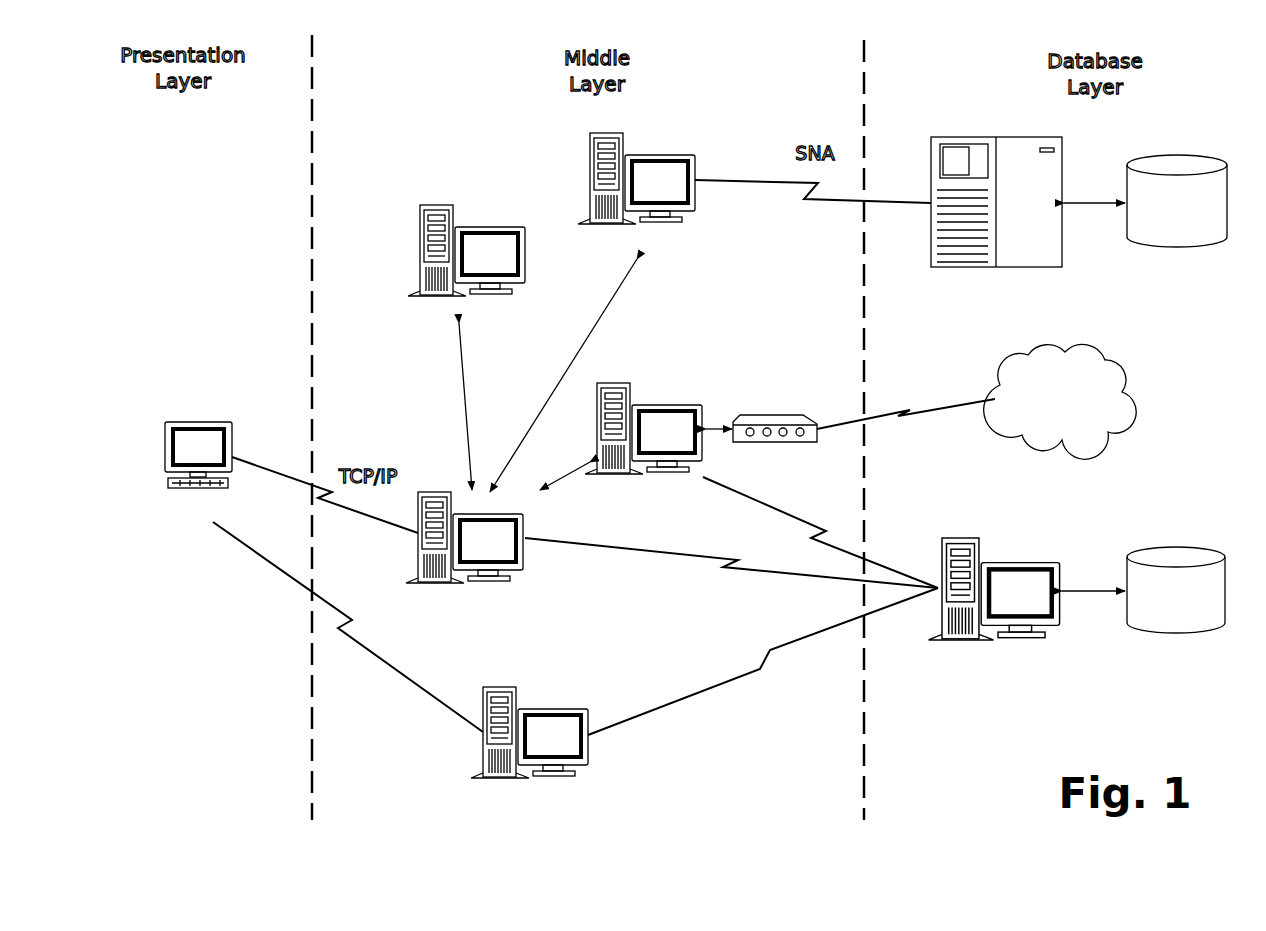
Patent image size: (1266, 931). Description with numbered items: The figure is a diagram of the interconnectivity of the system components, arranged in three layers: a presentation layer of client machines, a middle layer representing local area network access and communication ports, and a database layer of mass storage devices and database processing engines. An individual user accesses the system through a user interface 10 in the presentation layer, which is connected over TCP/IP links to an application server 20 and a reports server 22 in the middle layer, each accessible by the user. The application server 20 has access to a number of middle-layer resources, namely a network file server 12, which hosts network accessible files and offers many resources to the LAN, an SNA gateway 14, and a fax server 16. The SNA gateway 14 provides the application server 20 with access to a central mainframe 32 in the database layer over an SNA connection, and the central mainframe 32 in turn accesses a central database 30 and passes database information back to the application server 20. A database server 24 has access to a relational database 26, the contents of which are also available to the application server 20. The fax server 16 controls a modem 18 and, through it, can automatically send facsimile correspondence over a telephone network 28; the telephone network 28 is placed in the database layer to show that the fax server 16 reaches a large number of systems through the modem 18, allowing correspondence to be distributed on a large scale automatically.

The user interface 10 is at (199, 422).
The network file server 12 is at (477, 228).
The SNA gateway 14 is at (637, 160).
The fax server 16 is at (653, 410).
The modem 18 is at (760, 416).
The application server 20 is at (525, 557).
The reports server 22 is at (588, 760).
The database server 24 is at (1062, 612).
The relational database 26 is at (1226, 612).
The telephone network 28 is at (1120, 423).
The central database 30 is at (1157, 253).
The central mainframe 32 is at (980, 137).